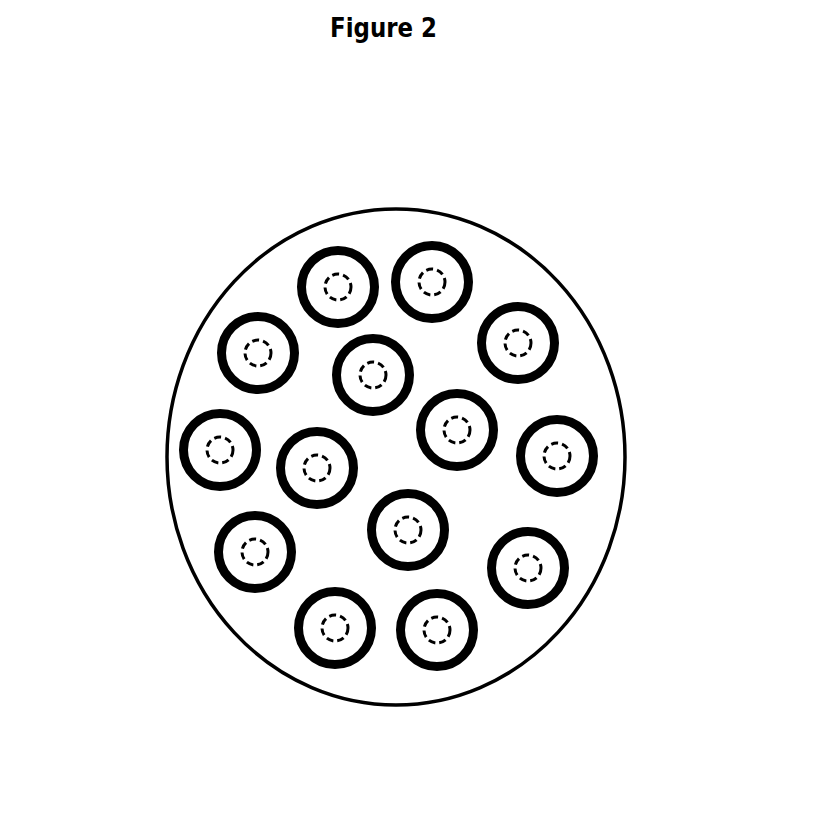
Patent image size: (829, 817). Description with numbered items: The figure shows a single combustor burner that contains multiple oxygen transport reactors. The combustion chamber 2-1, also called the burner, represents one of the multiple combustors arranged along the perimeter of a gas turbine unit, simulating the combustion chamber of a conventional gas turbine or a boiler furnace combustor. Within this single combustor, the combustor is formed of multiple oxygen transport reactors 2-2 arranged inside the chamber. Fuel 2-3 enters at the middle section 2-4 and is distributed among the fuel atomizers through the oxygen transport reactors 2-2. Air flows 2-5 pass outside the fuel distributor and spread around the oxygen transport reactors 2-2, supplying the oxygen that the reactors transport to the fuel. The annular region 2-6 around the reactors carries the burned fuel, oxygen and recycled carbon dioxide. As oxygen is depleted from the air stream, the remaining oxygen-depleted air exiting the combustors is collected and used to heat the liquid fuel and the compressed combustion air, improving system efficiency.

The combustion chamber 2-1 is at (443, 192).
The oxygen transport reactors 2-2 is at (483, 627).
The fuel 2-3 is at (160, 580).
The middle section 2-4 is at (253, 567).
The air flows 2-5 is at (590, 275).
The burned fuel, oxygen and recycled CO2 annulus 2-6 is at (520, 624).